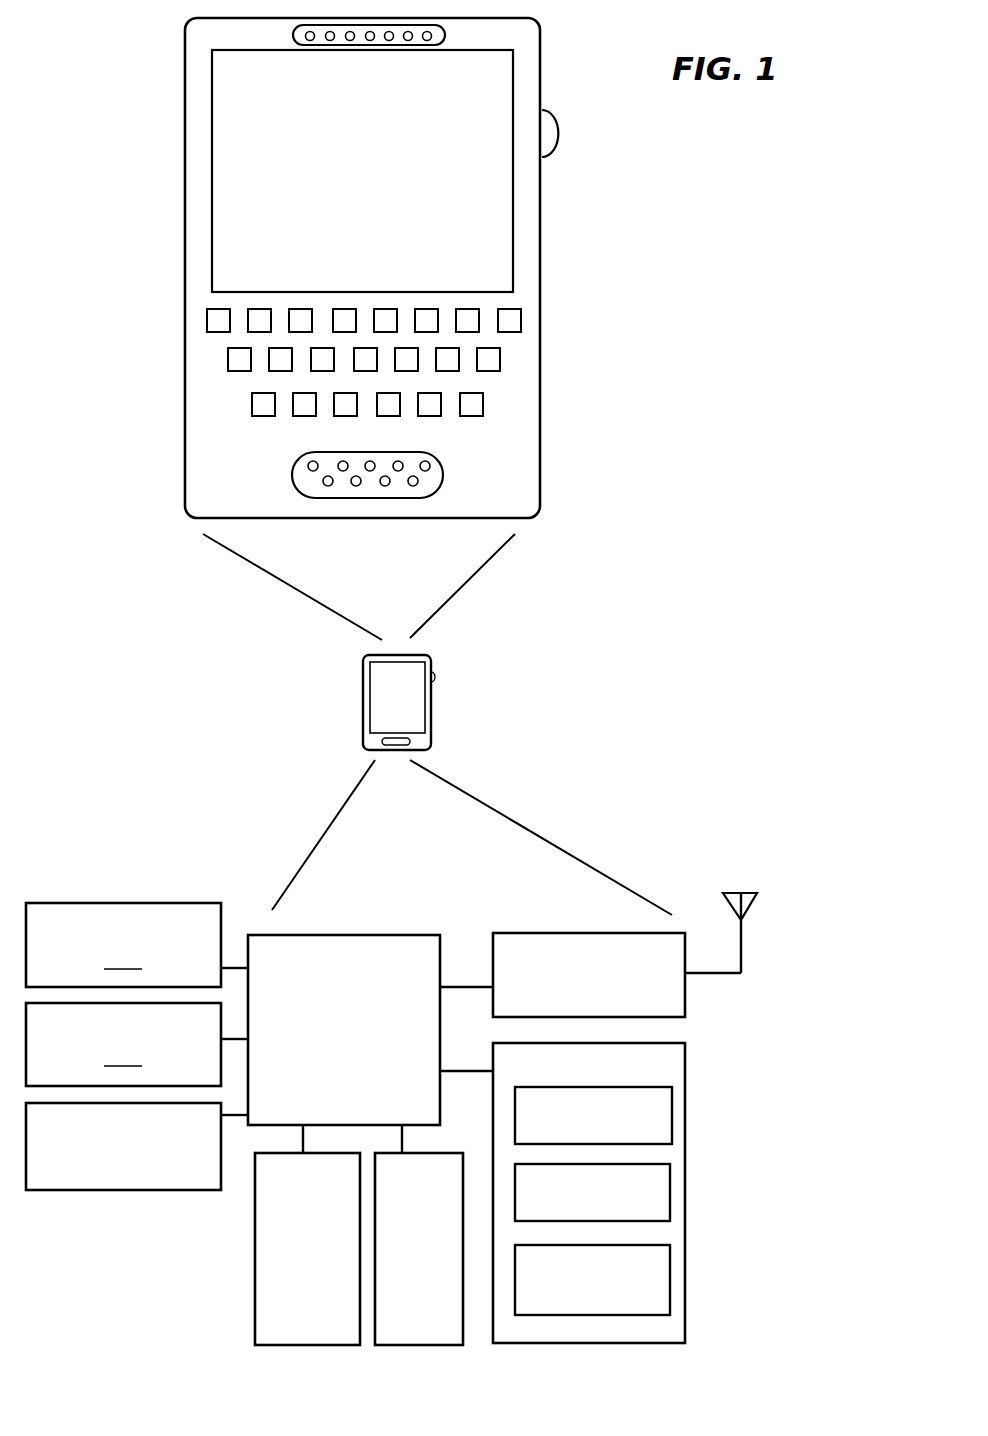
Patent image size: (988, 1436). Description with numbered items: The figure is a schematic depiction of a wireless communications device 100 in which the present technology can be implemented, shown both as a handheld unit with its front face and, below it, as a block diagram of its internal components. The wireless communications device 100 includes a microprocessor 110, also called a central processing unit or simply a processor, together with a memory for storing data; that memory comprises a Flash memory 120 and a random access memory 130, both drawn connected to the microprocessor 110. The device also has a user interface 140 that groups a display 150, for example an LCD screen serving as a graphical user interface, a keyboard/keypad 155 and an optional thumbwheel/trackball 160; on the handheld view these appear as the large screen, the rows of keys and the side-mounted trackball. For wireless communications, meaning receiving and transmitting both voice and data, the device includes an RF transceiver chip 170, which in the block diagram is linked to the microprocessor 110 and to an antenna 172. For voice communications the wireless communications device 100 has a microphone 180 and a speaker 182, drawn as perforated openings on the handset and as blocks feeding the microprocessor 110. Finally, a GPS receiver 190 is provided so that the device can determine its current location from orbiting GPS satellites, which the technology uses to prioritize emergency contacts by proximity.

The wireless communications device 100 is at (542, 272).
The microprocessor 110 is at (325, 1048).
The Flash memory 120 is at (288, 1283).
The random access memory 130 is at (400, 1271).
The user interface 140 is at (685, 1072).
The display 150 is at (480, 207).
The keyboard/keypad 155 is at (513, 362).
The thumbwheel/trackball 160 is at (558, 137).
The RF transceiver chip 170 is at (570, 1008).
The antenna 172 is at (742, 950).
The microphone 180 is at (443, 477).
The speaker 182 is at (293, 36).
The GPS receiver 190 is at (104, 1168).